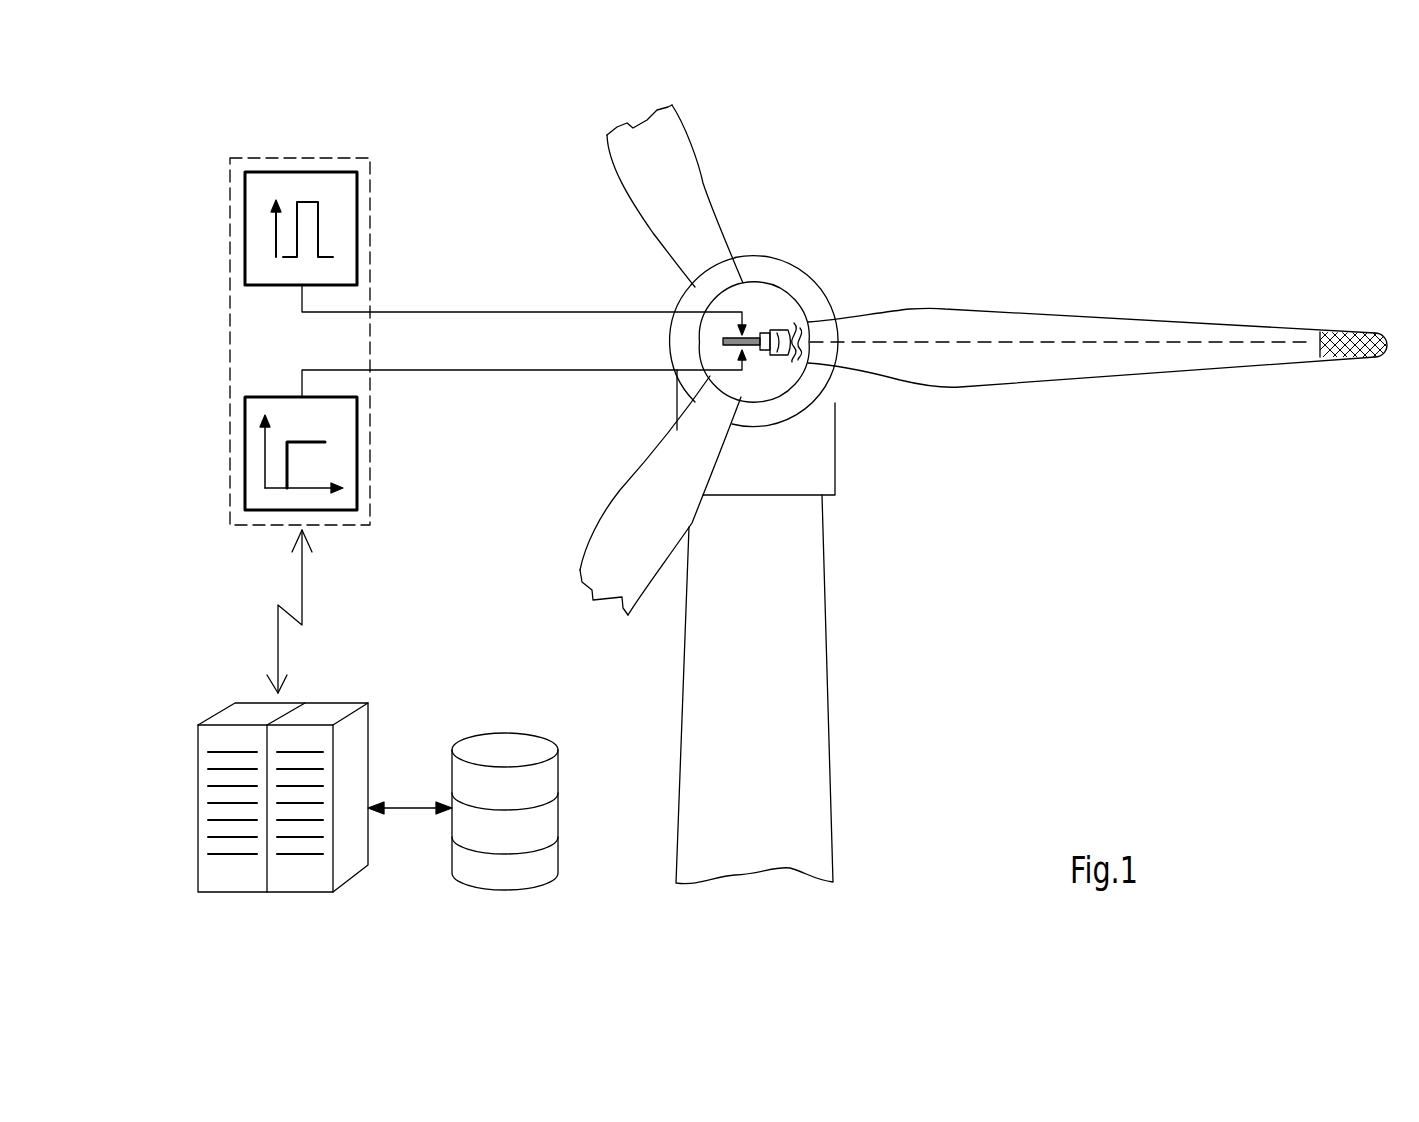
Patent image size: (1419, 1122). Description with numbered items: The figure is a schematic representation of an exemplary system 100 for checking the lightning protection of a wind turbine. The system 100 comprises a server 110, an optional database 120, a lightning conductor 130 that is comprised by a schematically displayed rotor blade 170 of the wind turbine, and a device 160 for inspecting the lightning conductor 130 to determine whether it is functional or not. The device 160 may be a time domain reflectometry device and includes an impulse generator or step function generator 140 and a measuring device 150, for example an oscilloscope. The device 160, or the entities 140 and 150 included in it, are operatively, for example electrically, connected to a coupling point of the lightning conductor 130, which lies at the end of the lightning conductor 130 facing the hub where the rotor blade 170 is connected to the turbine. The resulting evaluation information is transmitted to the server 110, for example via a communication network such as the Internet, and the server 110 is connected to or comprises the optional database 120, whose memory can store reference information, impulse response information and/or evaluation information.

The system 100 is at (1248, 172).
The server 110 is at (198, 805).
The database 120 is at (558, 808).
The lightning conductor 130 is at (805, 284).
The impulse generator or step function generator 140 is at (245, 229).
The measuring device 150 is at (245, 467).
The device for inspecting the lightning conductor 160 is at (230, 340).
The rotor blade 170 is at (1125, 363).